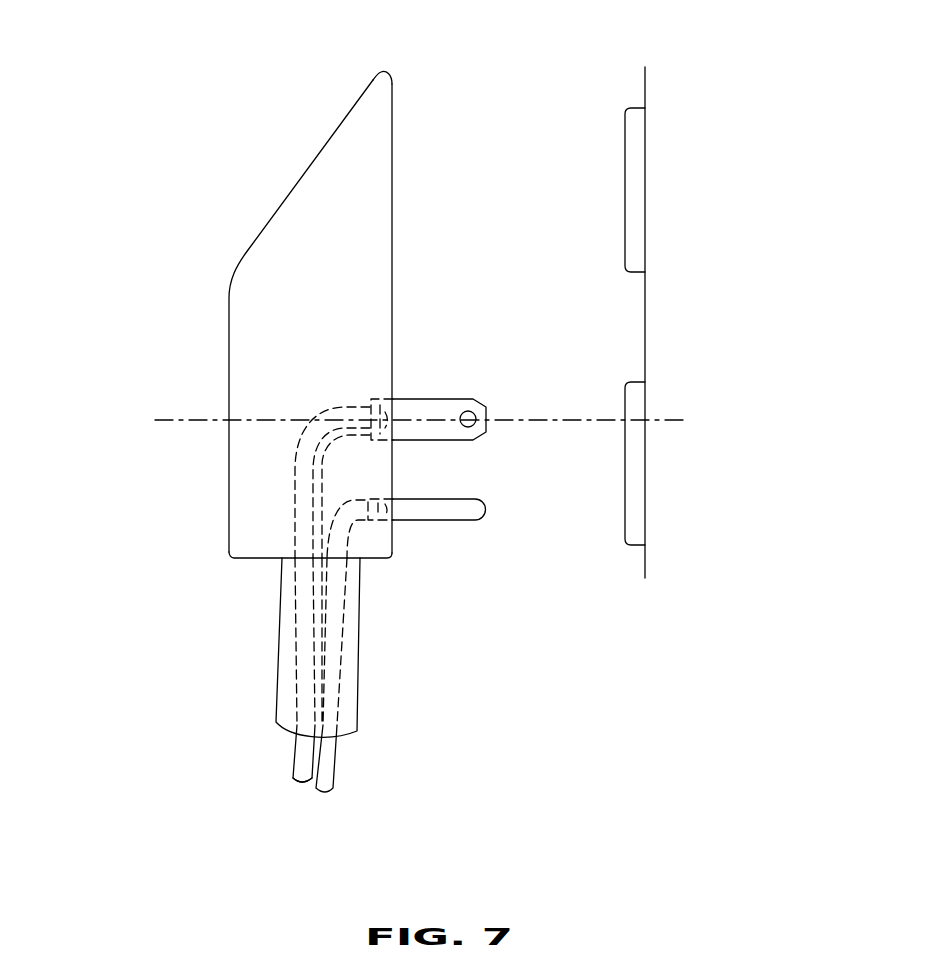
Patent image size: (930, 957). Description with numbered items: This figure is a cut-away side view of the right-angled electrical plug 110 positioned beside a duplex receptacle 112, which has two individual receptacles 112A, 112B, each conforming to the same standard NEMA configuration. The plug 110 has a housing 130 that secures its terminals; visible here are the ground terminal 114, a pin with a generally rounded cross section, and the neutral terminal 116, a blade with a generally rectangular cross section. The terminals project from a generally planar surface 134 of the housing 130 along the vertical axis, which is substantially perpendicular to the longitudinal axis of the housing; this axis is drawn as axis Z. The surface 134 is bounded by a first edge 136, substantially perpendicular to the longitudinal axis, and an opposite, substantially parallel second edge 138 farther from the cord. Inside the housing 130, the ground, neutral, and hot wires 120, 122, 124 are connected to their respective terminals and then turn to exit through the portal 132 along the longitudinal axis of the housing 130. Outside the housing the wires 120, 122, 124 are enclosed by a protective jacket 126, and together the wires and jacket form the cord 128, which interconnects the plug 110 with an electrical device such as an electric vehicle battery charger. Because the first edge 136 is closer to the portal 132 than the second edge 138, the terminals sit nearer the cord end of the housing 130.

The right-angled electrical plug 110 is at (255, 110).
The duplex receptacle 112 is at (587, 282).
The individual receptacle 112A is at (630, 514).
The individual receptacle 112B is at (628, 130).
The ground terminal 114 is at (440, 503).
The neutral terminal 116 is at (455, 402).
The ground wire 120 is at (323, 757).
The neutral wire 122 is at (333, 785).
The hot wire 124 is at (302, 768).
The protective jacket 126 is at (280, 665).
The cord 128 is at (287, 608).
The housing 130 is at (235, 273).
The portal 132 is at (293, 557).
The planar surface 134 is at (386, 143).
The first edge 136 is at (392, 562).
The second edge 138 is at (392, 76).
The insertion axis Z is at (165, 418).